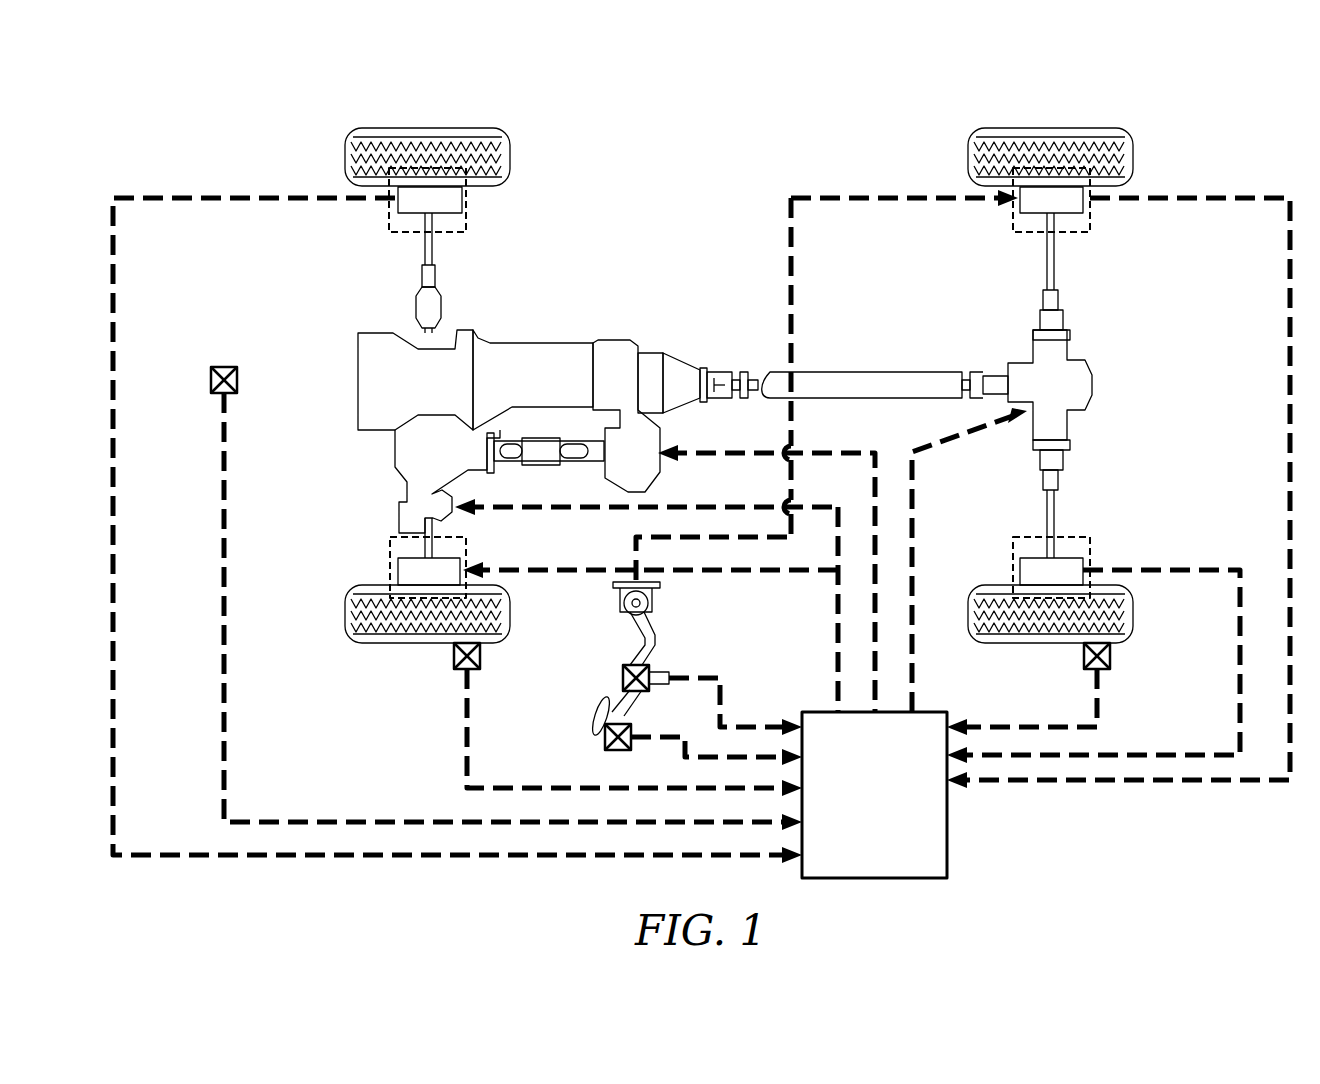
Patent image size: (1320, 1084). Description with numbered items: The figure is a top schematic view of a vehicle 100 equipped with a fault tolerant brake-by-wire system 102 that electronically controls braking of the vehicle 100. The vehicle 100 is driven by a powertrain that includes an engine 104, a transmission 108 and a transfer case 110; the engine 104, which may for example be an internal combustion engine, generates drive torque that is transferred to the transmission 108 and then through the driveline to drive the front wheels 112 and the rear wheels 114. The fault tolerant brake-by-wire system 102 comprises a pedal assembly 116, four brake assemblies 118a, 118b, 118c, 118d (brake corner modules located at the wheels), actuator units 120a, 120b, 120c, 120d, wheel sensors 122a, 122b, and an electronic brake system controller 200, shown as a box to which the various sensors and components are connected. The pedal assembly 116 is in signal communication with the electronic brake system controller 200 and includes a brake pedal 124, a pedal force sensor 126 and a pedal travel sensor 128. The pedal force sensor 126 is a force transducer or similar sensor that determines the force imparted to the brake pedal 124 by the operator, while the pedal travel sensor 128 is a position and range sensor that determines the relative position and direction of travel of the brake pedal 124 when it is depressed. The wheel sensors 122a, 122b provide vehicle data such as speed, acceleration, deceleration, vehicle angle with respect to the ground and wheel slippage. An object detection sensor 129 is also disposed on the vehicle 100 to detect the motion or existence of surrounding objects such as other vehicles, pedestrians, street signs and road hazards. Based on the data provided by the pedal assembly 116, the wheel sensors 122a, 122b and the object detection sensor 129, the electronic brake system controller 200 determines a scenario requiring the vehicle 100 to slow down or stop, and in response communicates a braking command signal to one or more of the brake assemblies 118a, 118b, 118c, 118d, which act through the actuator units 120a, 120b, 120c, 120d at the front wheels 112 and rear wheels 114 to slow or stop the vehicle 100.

The vehicle 100 is at (278, 142).
The fault tolerant BBW system 102 is at (985, 836).
The engine 104 is at (350, 338).
The transmission 108 is at (567, 332).
The transfer case 110 is at (628, 330).
The front wheels 112 is at (398, 112).
The rear wheels 114 is at (1040, 112).
The pedal assembly 116 is at (668, 628).
The brake assembly 118a is at (380, 555).
The brake assembly 118b is at (478, 212).
The brake assembly 118c is at (1102, 213).
The brake assembly 118d is at (1000, 555).
The actuator unit 120a is at (432, 570).
The actuator unit 120b is at (440, 205).
The actuator unit 120c is at (1060, 205).
The actuator unit 120d is at (1060, 572).
The wheel sensor 122a is at (462, 675).
The wheel sensor 122b is at (1092, 670).
The brake pedal 124 is at (596, 708).
The pedal force sensor 126 is at (625, 668).
The pedal travel sensor 128 is at (606, 742).
The object detection sensor 129 is at (215, 400).
The EBS controller 200 is at (874, 795).